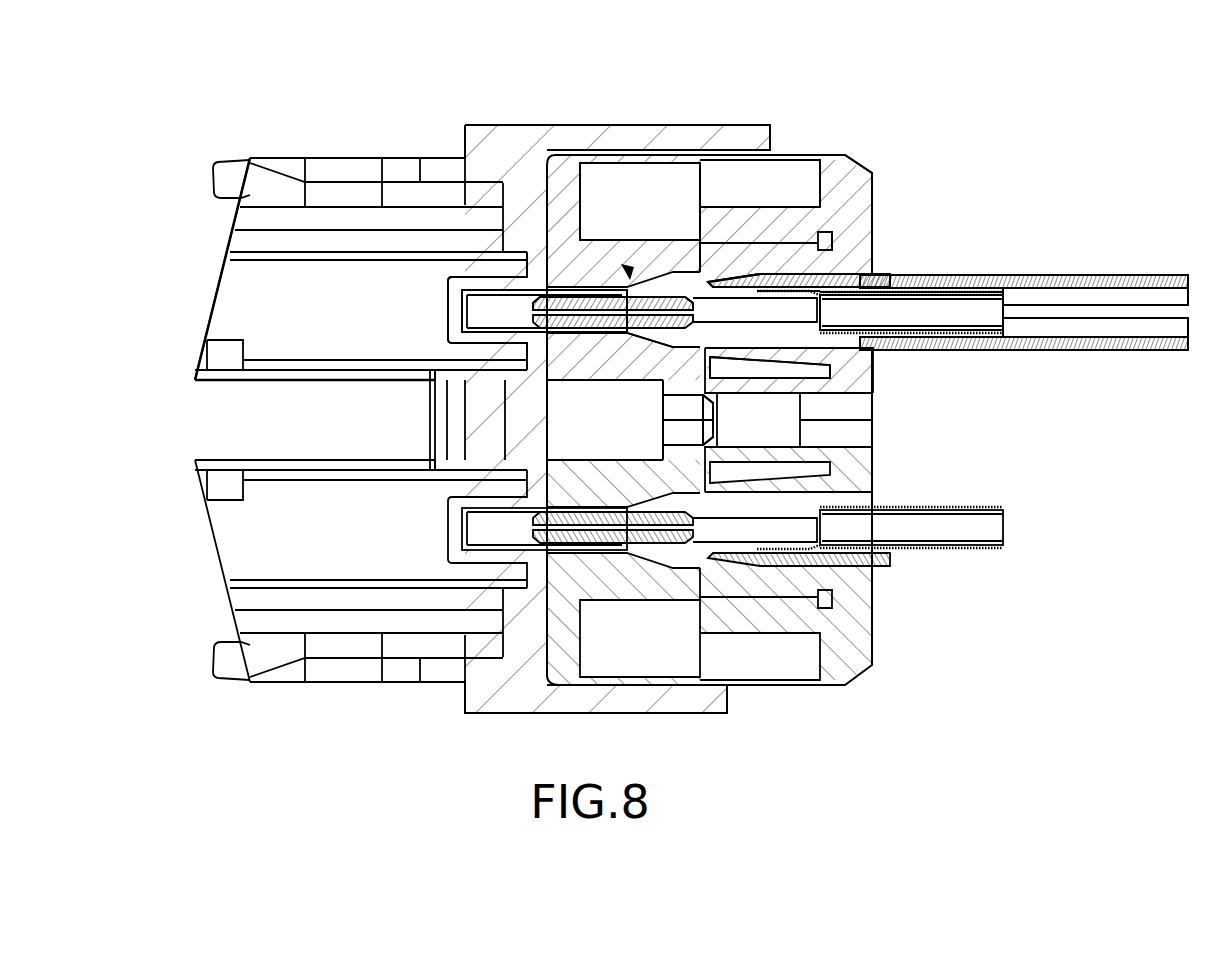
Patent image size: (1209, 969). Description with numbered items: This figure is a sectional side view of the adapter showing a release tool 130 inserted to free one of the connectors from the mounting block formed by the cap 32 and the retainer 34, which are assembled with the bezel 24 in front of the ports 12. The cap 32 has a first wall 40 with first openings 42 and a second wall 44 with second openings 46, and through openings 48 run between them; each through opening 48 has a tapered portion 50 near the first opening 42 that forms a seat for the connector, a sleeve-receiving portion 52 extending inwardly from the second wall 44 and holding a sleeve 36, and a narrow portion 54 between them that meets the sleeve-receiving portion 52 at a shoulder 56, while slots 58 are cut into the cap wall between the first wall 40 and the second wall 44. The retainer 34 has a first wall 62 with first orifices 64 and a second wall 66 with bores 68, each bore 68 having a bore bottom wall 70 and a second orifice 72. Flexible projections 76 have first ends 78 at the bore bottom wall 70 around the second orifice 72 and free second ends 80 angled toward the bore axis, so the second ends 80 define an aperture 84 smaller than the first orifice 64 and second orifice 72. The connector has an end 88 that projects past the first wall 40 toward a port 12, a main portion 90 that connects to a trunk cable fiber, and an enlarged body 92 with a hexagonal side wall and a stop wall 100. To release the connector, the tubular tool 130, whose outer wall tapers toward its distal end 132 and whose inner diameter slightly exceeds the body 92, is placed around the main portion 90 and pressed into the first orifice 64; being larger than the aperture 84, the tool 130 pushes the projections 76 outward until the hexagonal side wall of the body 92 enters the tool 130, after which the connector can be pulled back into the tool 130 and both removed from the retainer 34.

The port 12 is at (248, 302).
The bezel 24 is at (492, 126).
The cap 32 is at (566, 175).
The retainer 34 is at (857, 170).
The sleeve 36 is at (485, 297).
The first wall 40 is at (705, 168).
The first opening 42 is at (700, 207).
The second wall 44 is at (528, 150).
The second opening 46 is at (545, 287).
The through opening 48 is at (630, 277).
The tapered portion 50 is at (655, 292).
The sleeve-receiving portion 52 is at (547, 345).
The narrow portion 54 is at (625, 335).
The shoulder 56 is at (600, 333).
The slot 58 is at (592, 173).
The first wall 62 is at (873, 228).
The first orifice 64 is at (878, 270).
The second wall 66 is at (707, 185).
The bore 68 is at (715, 258).
The bore bottom wall 70 is at (825, 232).
The second orifice 72 is at (873, 248).
The flexible projection 76 is at (855, 397).
The first end 78 is at (855, 362).
The second end 80 is at (725, 348).
The aperture 84 is at (690, 345).
The end 88 is at (535, 309).
The main portion 90 is at (992, 288).
The body 92 is at (653, 330).
The stop wall 100 is at (697, 278).
The tool 130 is at (1083, 278).
The distal end 132 is at (823, 303).